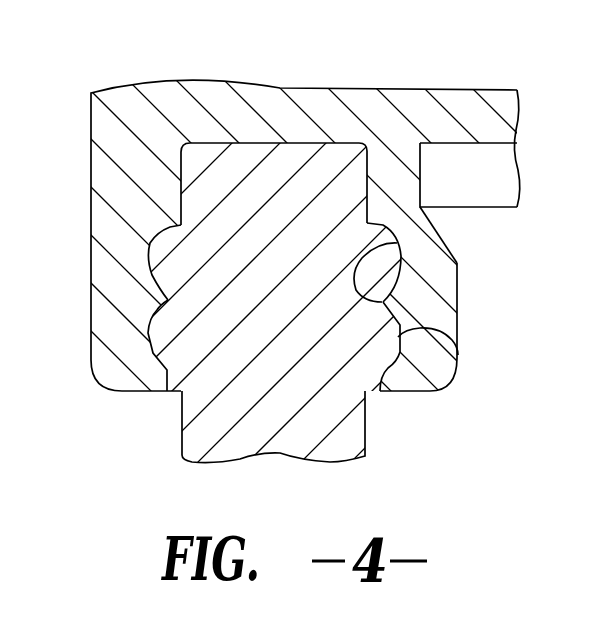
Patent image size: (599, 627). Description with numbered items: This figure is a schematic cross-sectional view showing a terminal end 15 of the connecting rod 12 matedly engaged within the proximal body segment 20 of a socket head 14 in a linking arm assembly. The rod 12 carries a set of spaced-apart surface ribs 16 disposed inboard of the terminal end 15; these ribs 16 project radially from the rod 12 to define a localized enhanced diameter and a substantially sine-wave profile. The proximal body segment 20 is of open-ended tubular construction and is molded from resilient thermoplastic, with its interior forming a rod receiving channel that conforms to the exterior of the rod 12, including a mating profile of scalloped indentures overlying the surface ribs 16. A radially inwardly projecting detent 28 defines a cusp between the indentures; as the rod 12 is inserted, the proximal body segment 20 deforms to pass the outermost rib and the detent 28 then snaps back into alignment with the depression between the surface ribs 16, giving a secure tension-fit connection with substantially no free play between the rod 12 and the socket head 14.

The rod 12 is at (367, 414).
The socket head 14 is at (273, 84).
The terminal end 15 is at (340, 162).
The surface rib 16 is at (153, 245).
The proximal body segment 20 is at (459, 282).
The detent 28 is at (385, 258).